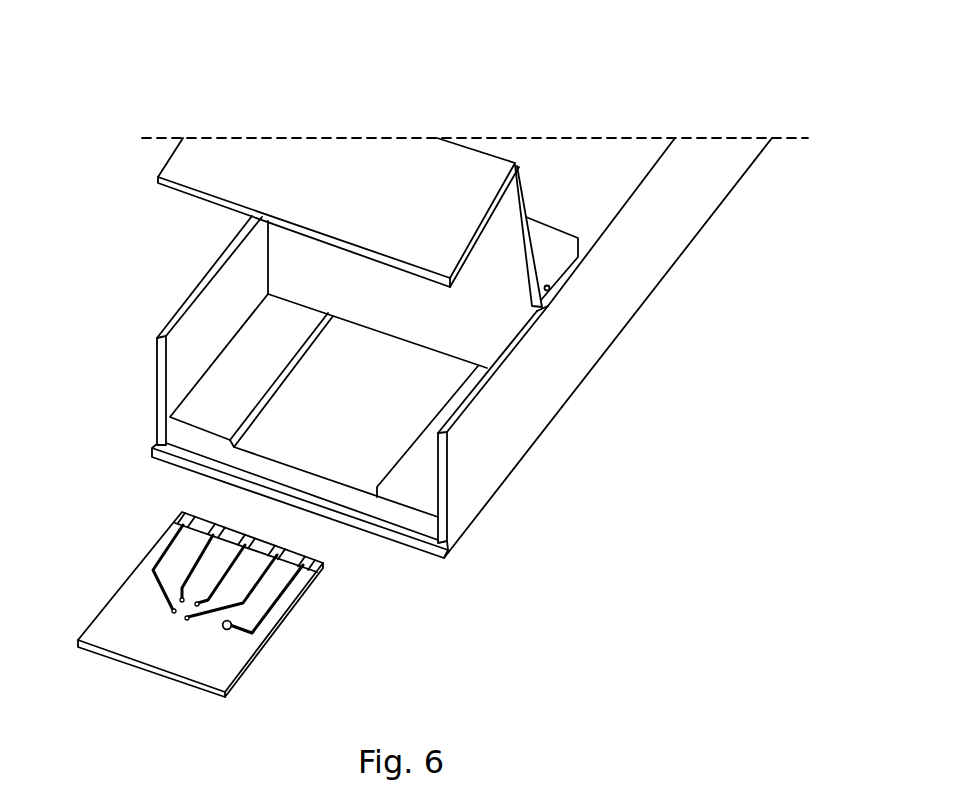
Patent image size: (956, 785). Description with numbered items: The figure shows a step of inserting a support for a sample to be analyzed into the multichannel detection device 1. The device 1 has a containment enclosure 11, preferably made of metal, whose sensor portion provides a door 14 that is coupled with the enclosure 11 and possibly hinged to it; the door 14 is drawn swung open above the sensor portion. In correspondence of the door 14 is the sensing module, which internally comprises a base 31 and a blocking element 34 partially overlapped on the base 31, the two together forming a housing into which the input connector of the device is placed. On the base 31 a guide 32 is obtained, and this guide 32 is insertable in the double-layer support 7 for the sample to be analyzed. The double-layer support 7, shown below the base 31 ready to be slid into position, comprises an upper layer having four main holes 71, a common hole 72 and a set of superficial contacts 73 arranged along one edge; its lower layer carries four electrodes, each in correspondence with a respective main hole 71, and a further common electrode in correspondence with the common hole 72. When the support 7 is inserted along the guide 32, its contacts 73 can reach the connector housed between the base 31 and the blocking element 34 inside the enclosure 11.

The multichannel detection device 1 is at (558, 125).
The containment enclosure 11 is at (695, 217).
The door 14 is at (247, 151).
The base 31 is at (190, 433).
The guide 32 is at (280, 423).
The blocking element 34 is at (498, 333).
The double-layer support 7 is at (177, 663).
The main holes 71 is at (172, 612).
The common hole 72 is at (232, 628).
The superficial contacts 73 is at (325, 565).